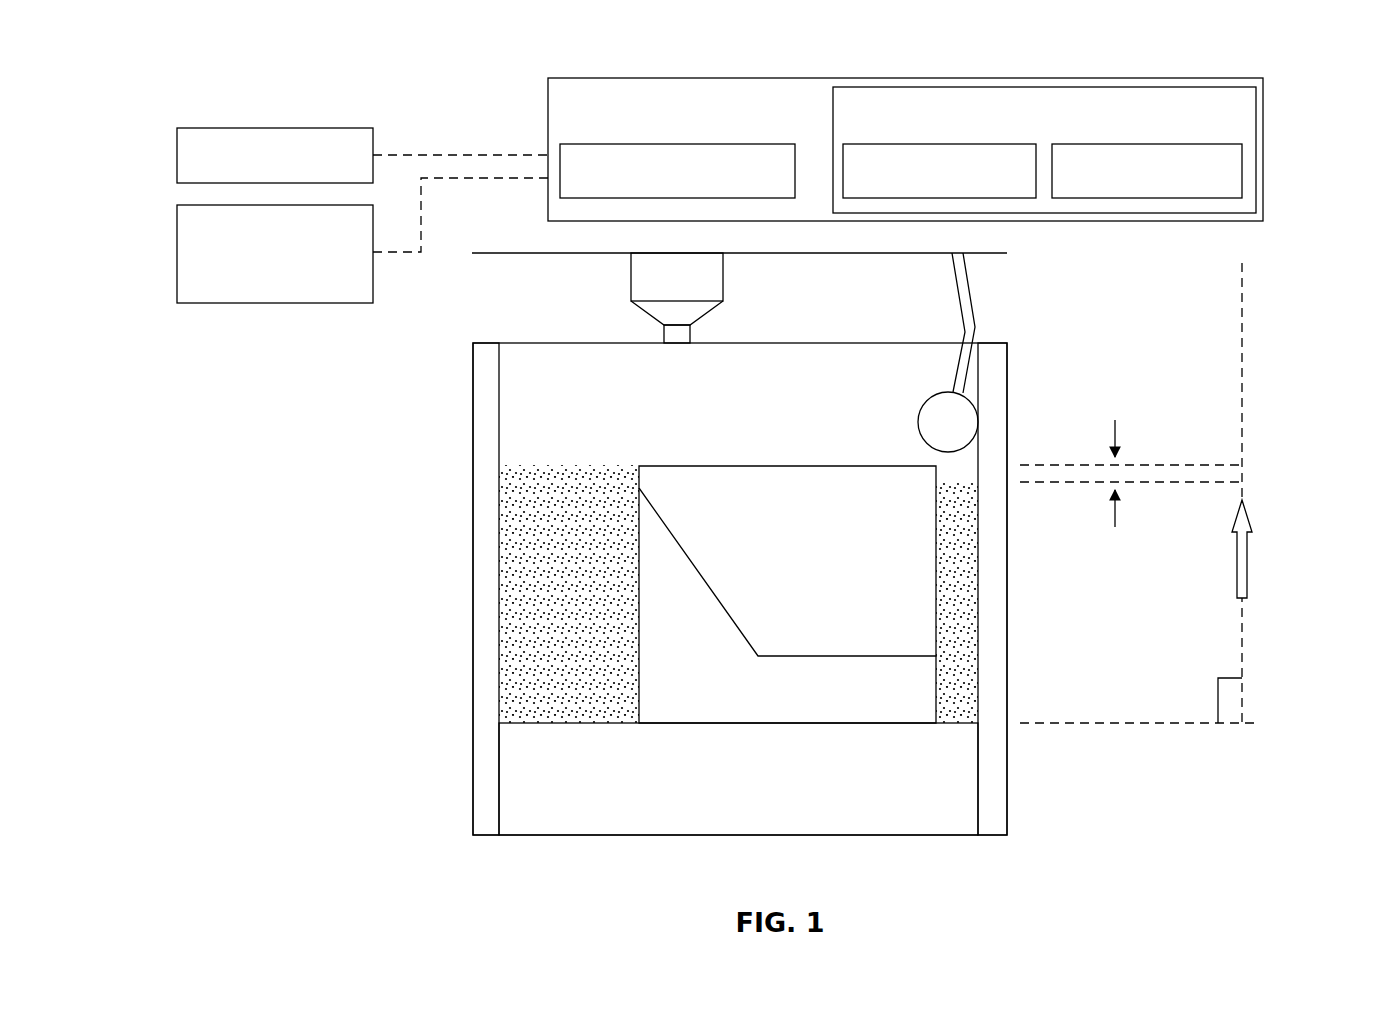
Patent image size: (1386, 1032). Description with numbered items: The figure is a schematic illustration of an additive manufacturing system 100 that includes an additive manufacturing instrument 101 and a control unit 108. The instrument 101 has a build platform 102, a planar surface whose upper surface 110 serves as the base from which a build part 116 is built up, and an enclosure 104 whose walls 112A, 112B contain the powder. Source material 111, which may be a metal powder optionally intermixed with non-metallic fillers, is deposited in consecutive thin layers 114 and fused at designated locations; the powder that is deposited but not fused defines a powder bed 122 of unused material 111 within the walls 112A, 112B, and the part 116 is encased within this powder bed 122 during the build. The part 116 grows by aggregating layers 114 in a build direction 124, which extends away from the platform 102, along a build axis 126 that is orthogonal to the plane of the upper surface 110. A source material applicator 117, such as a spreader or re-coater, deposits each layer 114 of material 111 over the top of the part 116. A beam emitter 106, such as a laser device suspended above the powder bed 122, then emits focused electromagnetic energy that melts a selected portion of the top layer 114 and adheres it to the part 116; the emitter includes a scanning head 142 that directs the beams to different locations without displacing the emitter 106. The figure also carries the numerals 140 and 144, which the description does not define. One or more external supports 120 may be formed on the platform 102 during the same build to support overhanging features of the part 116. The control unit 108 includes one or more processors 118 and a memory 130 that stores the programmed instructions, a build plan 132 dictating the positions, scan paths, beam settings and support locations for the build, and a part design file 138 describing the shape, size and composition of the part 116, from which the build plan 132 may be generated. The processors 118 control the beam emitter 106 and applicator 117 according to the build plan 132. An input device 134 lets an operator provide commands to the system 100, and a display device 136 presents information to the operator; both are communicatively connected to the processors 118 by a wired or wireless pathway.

The additive manufacturing system 100 is at (466, 110).
The additive manufacturing instrument 101 is at (414, 494).
The build platform 102 is at (538, 825).
The enclosure 104 is at (465, 340).
The beam emitter 106 is at (693, 312).
The control unit 108 is at (781, 78).
The upper surface 110 is at (540, 722).
The source material 111 is at (540, 487).
The wall 112A is at (483, 398).
The wall 112B is at (993, 384).
The layer 114 is at (1118, 437).
The build part 116 is at (907, 550).
The source material applicator 117 is at (976, 337).
The processors 118 is at (579, 144).
The external supports 120 is at (868, 708).
The powder bed 122 is at (540, 615).
The build direction 124 is at (1248, 558).
The build axis 126 is at (1244, 437).
The memory 130 is at (950, 87).
The build plan 132 is at (1005, 144).
The input device 134 is at (277, 128).
The display device 136 is at (276, 303).
The part design file 138 is at (1147, 144).
The print head 140 is at (708, 274).
The scanning head 142 is at (677, 340).
The rail 144 is at (575, 253).